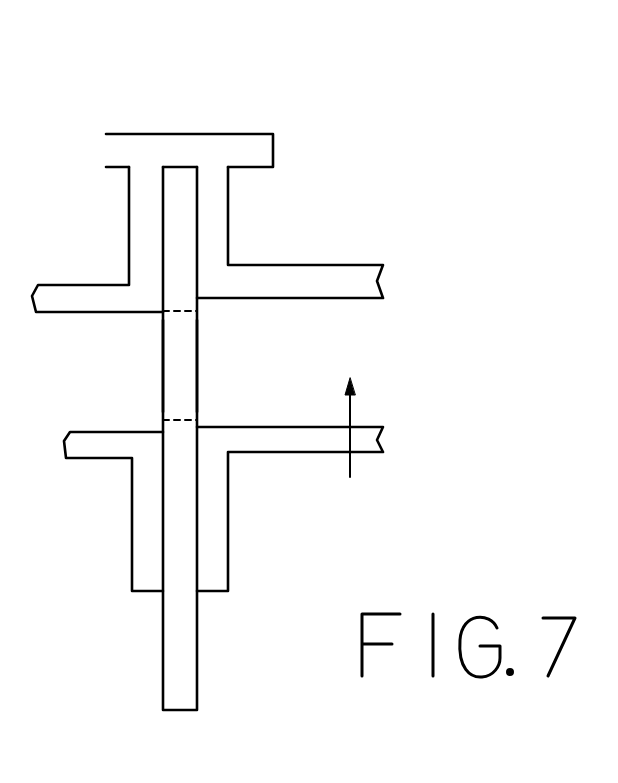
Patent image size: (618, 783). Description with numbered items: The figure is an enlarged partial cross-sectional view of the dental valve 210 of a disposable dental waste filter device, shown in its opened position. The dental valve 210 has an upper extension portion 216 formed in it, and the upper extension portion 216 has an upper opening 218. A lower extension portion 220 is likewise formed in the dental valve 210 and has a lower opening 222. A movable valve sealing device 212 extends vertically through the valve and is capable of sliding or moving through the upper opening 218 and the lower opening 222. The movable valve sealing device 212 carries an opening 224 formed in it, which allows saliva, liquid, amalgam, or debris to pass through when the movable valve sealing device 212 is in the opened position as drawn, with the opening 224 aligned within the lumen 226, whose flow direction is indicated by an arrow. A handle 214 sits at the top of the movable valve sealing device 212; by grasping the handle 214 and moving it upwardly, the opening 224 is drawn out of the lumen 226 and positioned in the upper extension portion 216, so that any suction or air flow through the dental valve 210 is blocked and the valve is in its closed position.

The dental valve 210 is at (338, 185).
The movable valve sealing device 212 is at (142, 640).
The handle 214 is at (184, 148).
The upper extension portion 216 is at (213, 227).
The upper opening 218 is at (162, 167).
The lower extension portion 220 is at (218, 533).
The lower opening 222 is at (197, 593).
The opening 224 is at (182, 368).
The lumen 226 is at (368, 448).